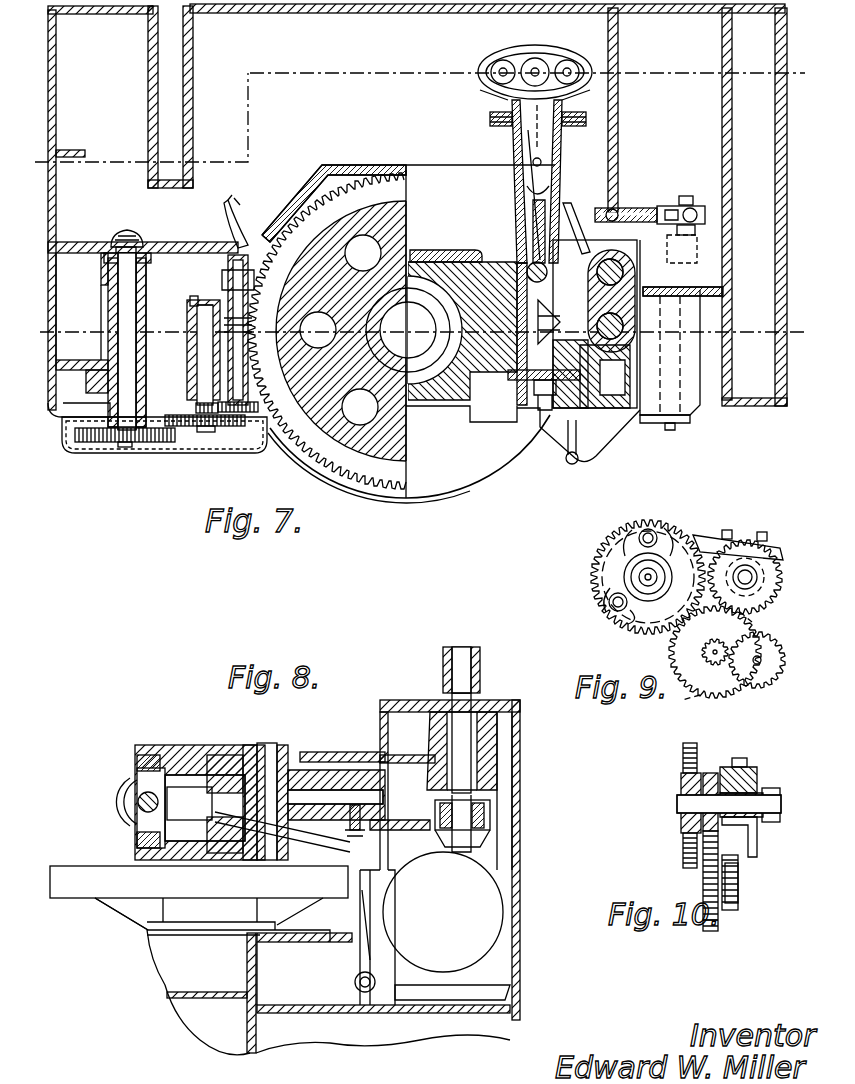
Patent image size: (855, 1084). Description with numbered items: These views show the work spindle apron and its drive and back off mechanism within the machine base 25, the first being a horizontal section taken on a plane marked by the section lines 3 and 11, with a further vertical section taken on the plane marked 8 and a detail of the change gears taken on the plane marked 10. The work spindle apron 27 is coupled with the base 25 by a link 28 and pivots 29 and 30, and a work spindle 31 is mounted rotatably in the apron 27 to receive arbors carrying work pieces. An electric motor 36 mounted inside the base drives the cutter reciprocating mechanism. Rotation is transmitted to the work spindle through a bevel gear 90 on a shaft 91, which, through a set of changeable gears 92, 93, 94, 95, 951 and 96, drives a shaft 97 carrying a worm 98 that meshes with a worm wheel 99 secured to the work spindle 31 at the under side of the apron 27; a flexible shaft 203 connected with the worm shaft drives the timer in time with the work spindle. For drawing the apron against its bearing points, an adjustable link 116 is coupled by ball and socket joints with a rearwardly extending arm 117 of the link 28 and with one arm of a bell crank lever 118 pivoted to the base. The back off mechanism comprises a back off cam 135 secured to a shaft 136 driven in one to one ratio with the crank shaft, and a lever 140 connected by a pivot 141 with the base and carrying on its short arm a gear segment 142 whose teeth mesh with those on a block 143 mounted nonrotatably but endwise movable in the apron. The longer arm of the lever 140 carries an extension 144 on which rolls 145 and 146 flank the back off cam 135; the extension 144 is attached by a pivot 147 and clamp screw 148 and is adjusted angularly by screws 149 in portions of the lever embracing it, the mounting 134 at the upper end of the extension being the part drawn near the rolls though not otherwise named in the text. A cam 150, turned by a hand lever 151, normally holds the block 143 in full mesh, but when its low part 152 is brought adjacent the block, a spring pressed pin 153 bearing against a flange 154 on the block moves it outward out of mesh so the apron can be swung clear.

In FIG. 7, the section line 3— 3 is at (44, 313).
In FIG. 7, the section line 8— 8 is at (523, 32).
In FIG. 9, the section line 10— 10 is at (733, 508).
In FIG. 7, the section line 11— 11 is at (44, 182).
In FIG. 8, the base 25 is at (522, 942).
In FIG. 7, the work spindle apron 27 is at (478, 372).
In FIG. 8, the work spindle apron 27 is at (183, 760).
In FIG. 7, the link 28 is at (636, 300).
In FIG. 7, the pivot 29 is at (598, 220).
In FIG. 7, the pivot 30 is at (605, 376).
In FIG. 7, the work spindle 31 is at (445, 375).
In FIG. 8, the electric motor 36 is at (470, 890).
In FIG. 7, the bevel gear 90 is at (144, 240).
In FIG. 7, the shaft 91 is at (130, 312).
In FIG. 7, the change gear 92 is at (107, 445).
In FIG. 9, the change gear 92 is at (590, 570).
In FIG. 10, the change gear 92 is at (683, 748).
In FIG. 9, the change gear 93 is at (772, 575).
In FIG. 10, the change gear 93 is at (681, 787).
In FIG. 10, the change gear 94 is at (712, 773).
In FIG. 7, the change gear 95 is at (184, 428).
In FIG. 9, the change gear 95 is at (720, 692).
In FIG. 10, the change gear 95 is at (718, 930).
In FIG. 7, the change gear 951 is at (210, 415).
In FIG. 9, the change gear 951 is at (706, 662).
In FIG. 10, the change gear 951 is at (740, 885).
In FIG. 7, the change gear 96 is at (262, 440).
In FIG. 9, the change gear 96 is at (778, 640).
In FIG. 10, the change gear 96 is at (740, 900).
In FIG. 7, the shaft 97 is at (248, 348).
In FIG. 7, the worm 98 is at (222, 328).
In FIG. 7, the worm wheel 99 is at (368, 490).
In FIG. 8, the worm wheel 99 is at (142, 917).
In FIG. 7, the link 116 is at (645, 207).
In FIG. 7, the arm 117 is at (620, 206).
In FIG. 7, the bell crank lever 118 is at (700, 232).
In FIG. 7, the pump head 134 is at (565, 50).
In FIG. 8, the back off cam 135 is at (485, 820).
In FIG. 8, the shaft 136 is at (470, 712).
In FIG. 7, the lever 140 is at (520, 205).
In FIG. 8, the lever 140 is at (312, 770).
In FIG. 7, the pivot 141 is at (520, 250).
In FIG. 8, the pivot 141 is at (265, 745).
In FIG. 7, the gear segment 142 is at (598, 288).
In FIG. 8, the gear segment 142 is at (225, 774).
In FIG. 7, the block 143 is at (536, 318).
In FIG. 8, the block 143 is at (225, 835).
In FIG. 7, the extension 144 is at (525, 137).
In FIG. 8, the extension 144 is at (435, 868).
In FIG. 7, the roll 145 is at (480, 88).
In FIG. 7, the roll 146 is at (575, 88).
In FIG. 7, the pivot 147 is at (533, 164).
In FIG. 8, the pivot 147 is at (372, 805).
In FIG. 8, the clamp screw 148 is at (282, 852).
In FIG. 7, the screw 149 is at (490, 118).
In FIG. 7, the cam 150 is at (542, 412).
In FIG. 8, the cam 150 is at (126, 800).
In FIG. 7, the hand lever 151 is at (578, 450).
In FIG. 8, the low part 152 is at (137, 772).
In FIG. 8, the spring pressed pin 153 is at (192, 842).
In FIG. 8, the flange 154 is at (137, 832).
In FIG. 7, the flexible shaft 203 is at (244, 216).